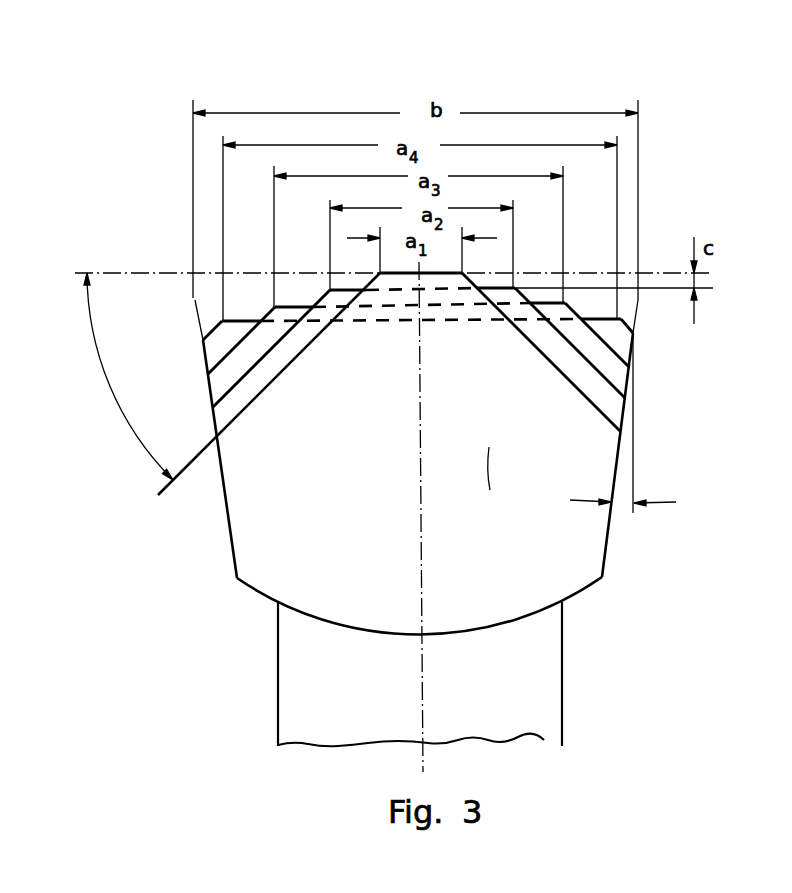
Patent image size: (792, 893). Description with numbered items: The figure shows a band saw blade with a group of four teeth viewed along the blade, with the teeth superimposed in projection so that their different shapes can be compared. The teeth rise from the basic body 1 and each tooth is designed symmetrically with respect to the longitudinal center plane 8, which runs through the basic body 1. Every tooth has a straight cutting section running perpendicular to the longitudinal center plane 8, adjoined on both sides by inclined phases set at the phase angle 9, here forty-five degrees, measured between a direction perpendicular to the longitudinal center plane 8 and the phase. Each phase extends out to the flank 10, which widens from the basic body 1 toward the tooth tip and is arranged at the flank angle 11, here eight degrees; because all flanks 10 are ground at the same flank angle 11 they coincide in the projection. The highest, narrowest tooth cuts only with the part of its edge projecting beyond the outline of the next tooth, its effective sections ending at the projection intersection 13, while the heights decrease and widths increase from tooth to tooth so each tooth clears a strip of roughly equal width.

The basic body 1 is at (530, 698).
The longitudinal center plane 8 is at (421, 668).
The phase angle 9 is at (128, 376).
The flank 10 is at (660, 523).
The flank angle 11 is at (623, 423).
The projection intersection 13 is at (480, 288).